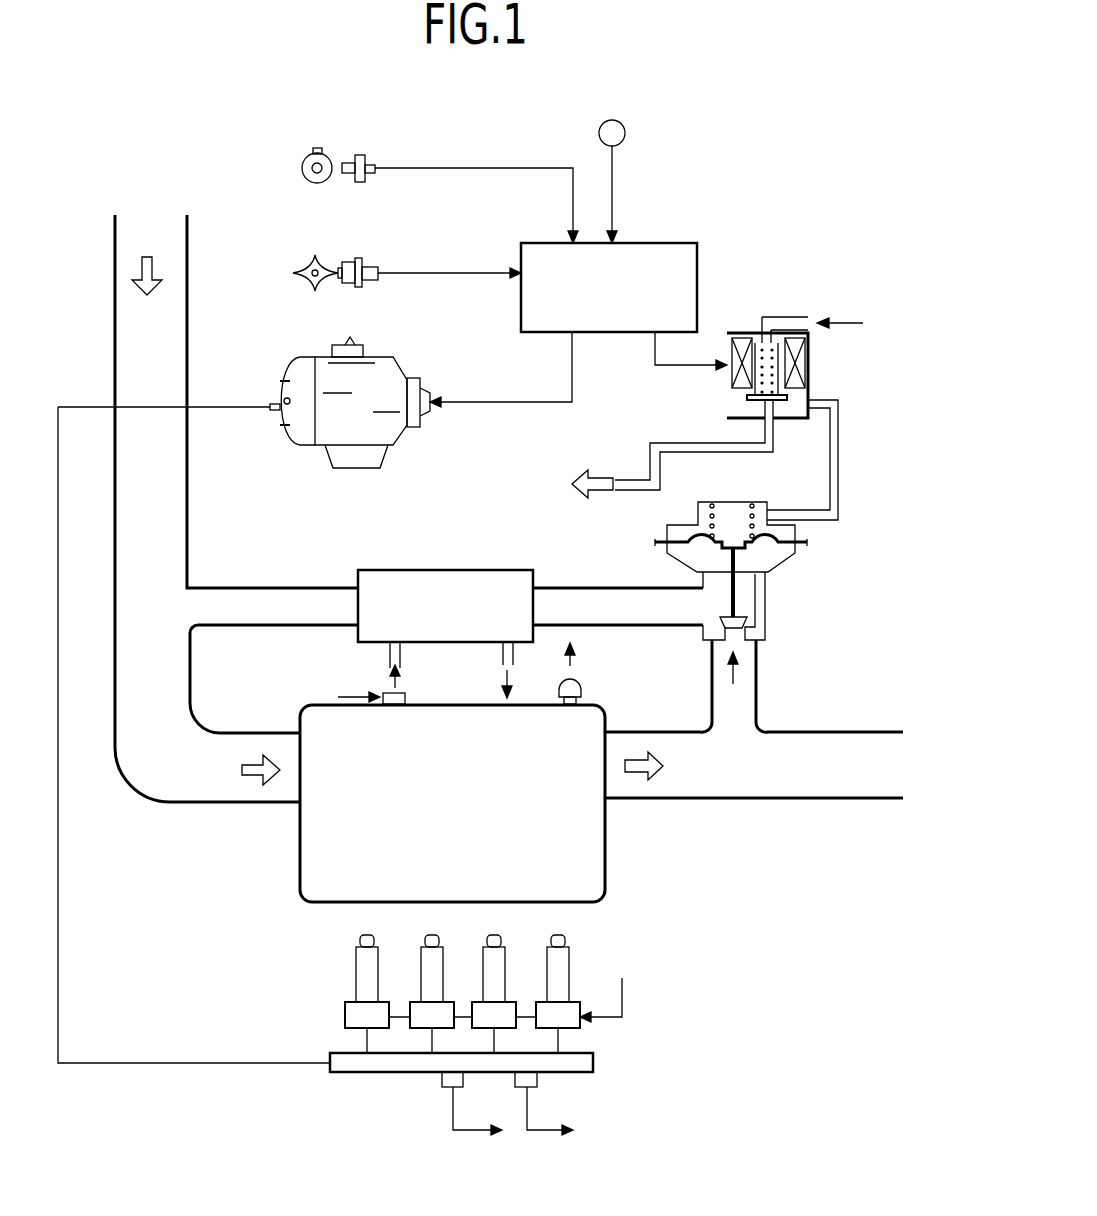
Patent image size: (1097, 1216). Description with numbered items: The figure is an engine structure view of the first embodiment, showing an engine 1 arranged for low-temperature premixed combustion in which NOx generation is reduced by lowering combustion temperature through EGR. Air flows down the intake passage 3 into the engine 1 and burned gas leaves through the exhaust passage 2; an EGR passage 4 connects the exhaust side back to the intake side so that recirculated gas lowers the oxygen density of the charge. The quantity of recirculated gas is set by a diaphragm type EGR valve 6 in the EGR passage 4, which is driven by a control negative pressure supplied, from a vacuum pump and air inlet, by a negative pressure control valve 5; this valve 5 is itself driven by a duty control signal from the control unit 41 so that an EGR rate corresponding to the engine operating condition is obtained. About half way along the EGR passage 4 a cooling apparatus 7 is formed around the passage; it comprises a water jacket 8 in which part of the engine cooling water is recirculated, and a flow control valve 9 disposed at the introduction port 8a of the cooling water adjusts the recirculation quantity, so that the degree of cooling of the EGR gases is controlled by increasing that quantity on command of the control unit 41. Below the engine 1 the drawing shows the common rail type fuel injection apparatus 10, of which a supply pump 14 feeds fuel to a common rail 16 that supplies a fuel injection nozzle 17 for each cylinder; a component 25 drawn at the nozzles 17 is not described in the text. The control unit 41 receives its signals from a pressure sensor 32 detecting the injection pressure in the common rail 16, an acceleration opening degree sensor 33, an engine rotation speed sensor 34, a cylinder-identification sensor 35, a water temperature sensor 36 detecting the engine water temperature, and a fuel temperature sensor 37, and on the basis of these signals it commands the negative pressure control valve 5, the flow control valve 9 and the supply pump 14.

The engine 1 is at (300, 875).
The exhaust pipe 2 is at (740, 783).
The intake pipe 3 is at (177, 792).
The EGR passage 4 is at (750, 708).
The negative pressure control valve 5 is at (817, 393).
The diaphragm type EGR valve 6 is at (740, 597).
The cooling apparatus 7 is at (352, 568).
The water jacket 8 is at (467, 645).
The introduction port 8a is at (390, 658).
The flow control valve 9 is at (405, 698).
The fuel injection apparatus 10 is at (585, 1126).
The supply pump 14 is at (392, 373).
The common rail 16 is at (593, 1065).
The fuel injection nozzle 17 is at (567, 968).
The injector drive 25 is at (578, 1027).
The pressure sensor 32 is at (537, 1083).
The acceleration opening degree sensor 33 is at (598, 125).
The engine rotation speed sensor 34 is at (375, 268).
The cylinder-identification sensor 35 is at (360, 148).
The water temperature sensor 36 is at (580, 685).
The fuel temperature sensor 37 is at (442, 1080).
The control unit 41 is at (655, 242).